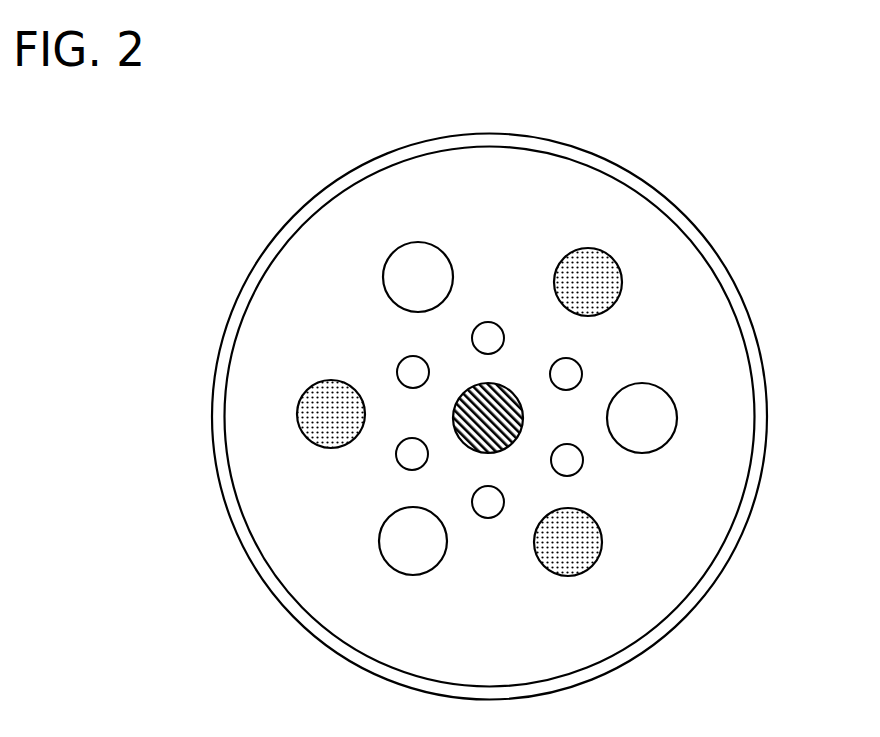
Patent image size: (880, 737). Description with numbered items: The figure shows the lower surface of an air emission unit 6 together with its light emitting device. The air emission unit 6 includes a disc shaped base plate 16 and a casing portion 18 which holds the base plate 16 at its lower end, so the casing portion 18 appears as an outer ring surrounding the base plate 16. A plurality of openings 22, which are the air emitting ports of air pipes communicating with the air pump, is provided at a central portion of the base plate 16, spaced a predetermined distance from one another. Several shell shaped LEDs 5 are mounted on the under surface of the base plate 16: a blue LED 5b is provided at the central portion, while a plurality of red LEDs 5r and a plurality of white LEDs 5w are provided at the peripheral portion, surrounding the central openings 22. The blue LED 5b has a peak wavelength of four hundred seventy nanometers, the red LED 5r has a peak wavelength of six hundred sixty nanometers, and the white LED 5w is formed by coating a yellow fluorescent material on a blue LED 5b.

The air emission unit 6 is at (429, 417).
The base plate 16 is at (265, 328).
The casing portion 18 is at (208, 522).
The openings (air emitting ports) 22 is at (407, 360).
The LED 5 is at (476, 413).
The white LED 5w is at (440, 265).
The red LED 5r is at (320, 443).
The blue LED 5b is at (510, 447).